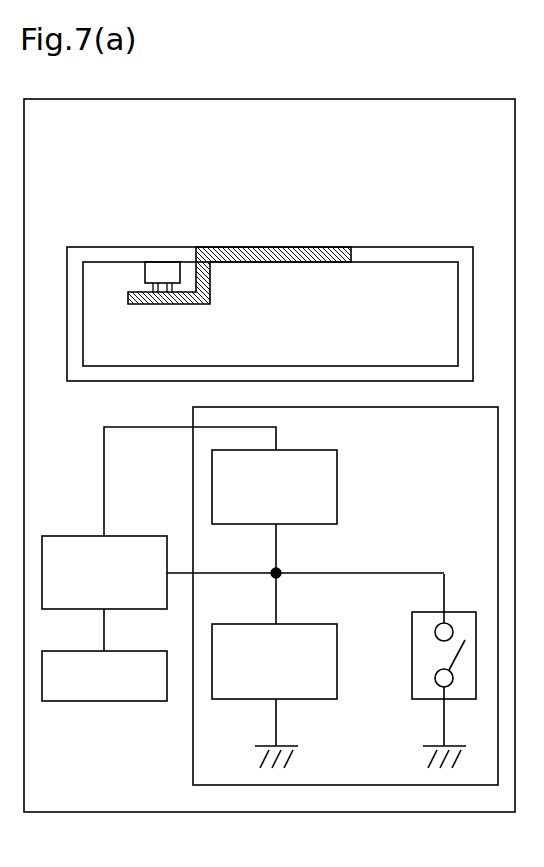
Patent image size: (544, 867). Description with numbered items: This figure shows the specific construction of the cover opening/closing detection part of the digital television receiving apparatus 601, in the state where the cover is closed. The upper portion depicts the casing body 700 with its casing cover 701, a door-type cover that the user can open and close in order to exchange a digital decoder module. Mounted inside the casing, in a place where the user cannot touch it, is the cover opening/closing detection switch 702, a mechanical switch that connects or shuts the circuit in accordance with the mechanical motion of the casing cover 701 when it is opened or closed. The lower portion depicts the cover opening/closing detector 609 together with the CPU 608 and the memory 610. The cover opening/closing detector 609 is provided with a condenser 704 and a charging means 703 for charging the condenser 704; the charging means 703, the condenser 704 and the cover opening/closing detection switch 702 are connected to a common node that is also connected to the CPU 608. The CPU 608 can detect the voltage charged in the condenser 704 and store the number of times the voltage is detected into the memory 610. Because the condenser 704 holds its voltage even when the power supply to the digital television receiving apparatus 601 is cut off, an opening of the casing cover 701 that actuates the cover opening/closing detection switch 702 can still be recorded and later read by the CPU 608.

The digital television receiving apparatus 601 is at (136, 190).
The casing body 700 is at (96, 247).
The casing cover 701 is at (338, 247).
The cover opening/closing detection switch 702 is at (165, 273).
The CPU 608 is at (75, 536).
The cover opening/closing detector 609 is at (193, 764).
The memory 610 is at (74, 702).
The charging means 703 is at (337, 497).
The condenser 704 is at (247, 700).